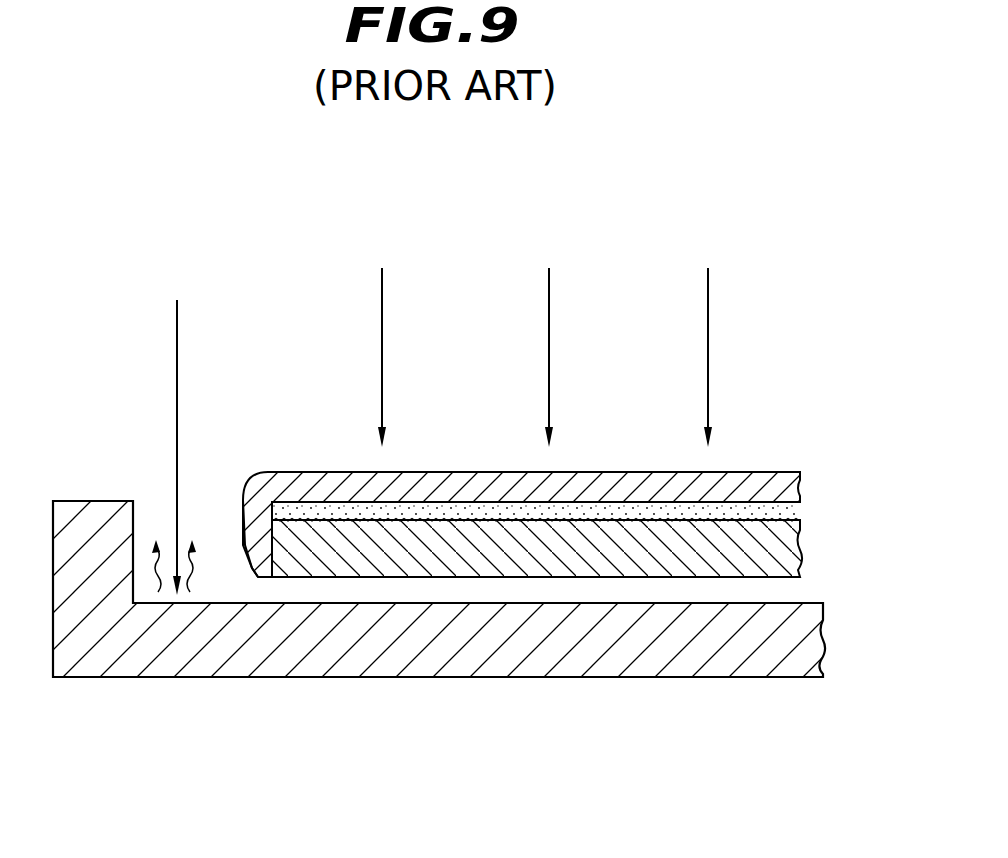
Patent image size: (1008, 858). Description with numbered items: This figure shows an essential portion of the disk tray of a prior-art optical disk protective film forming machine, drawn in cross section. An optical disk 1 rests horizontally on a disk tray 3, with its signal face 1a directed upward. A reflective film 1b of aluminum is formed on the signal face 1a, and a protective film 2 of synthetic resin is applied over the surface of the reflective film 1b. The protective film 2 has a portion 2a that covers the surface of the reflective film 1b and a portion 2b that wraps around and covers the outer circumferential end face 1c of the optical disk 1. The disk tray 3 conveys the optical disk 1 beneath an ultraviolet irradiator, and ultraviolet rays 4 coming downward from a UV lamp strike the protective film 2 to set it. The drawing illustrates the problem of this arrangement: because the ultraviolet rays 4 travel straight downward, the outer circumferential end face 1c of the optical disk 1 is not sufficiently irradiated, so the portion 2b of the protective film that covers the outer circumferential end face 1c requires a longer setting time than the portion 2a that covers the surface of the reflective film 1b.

The optical disk 1 is at (763, 557).
The signal face 1a is at (800, 472).
The reflective film 1b is at (732, 500).
The outer circumferential end face 1c is at (300, 520).
The protective film 2 is at (615, 462).
The portion of protective film covering the reflective film 2a is at (471, 482).
The portion of protective film covering the outer circumferential end face 2b is at (243, 530).
The disk tray 3 is at (470, 655).
The ultraviolet rays 4 is at (175, 388).